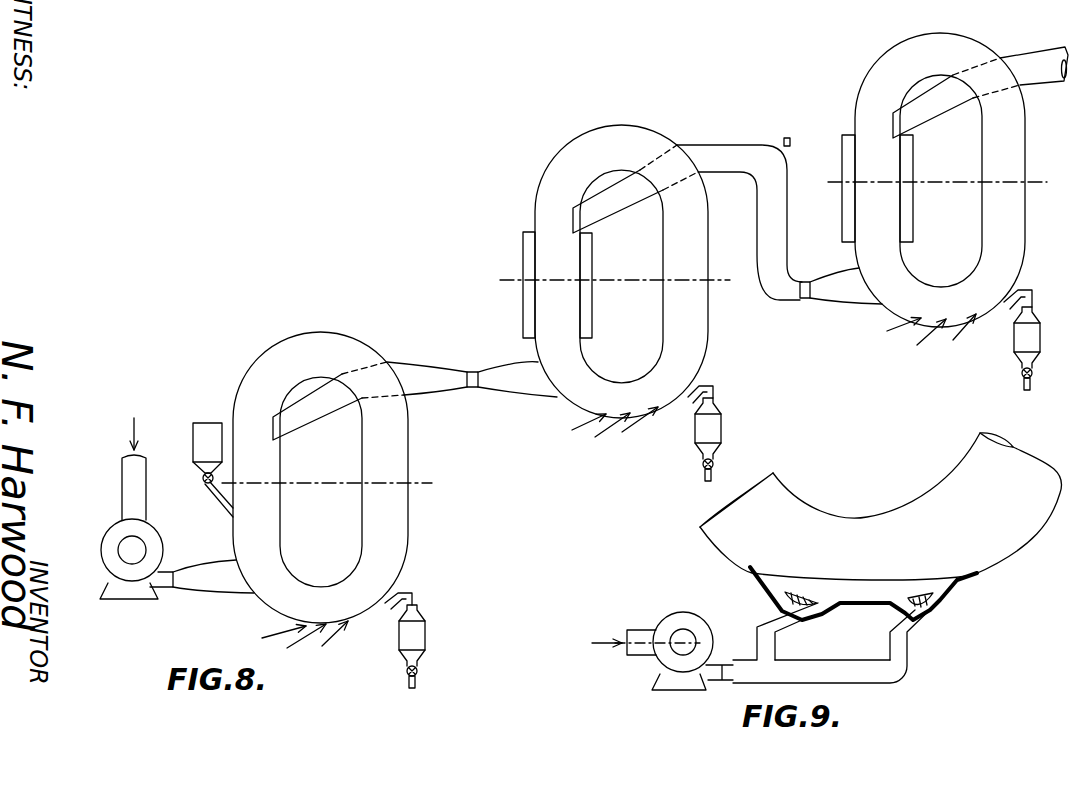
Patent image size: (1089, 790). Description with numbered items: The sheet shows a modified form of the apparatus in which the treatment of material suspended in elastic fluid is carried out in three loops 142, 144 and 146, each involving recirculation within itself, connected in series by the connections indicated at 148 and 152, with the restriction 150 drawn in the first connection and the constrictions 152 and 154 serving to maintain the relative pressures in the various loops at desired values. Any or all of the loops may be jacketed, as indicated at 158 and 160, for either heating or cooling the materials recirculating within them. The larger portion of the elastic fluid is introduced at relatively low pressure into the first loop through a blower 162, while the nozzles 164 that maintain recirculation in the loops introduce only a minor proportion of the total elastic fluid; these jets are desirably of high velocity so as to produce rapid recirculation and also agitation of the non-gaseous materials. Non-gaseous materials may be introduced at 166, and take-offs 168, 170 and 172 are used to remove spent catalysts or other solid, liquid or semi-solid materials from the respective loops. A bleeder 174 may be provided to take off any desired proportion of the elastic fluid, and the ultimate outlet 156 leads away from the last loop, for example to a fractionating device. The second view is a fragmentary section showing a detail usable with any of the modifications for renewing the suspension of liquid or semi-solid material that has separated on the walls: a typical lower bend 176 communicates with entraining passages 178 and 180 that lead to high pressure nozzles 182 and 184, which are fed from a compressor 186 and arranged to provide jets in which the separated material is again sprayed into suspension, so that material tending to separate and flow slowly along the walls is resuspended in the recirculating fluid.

In FIG. 8, the loop 142 is at (402, 525).
In FIG. 8, the loop 144 is at (703, 323).
In FIG. 8, the loop 146 is at (1015, 233).
In FIG. 8, the series connection 148 is at (433, 348).
In FIG. 8, the restricted throat 150 is at (475, 388).
In FIG. 8, the constriction 152 is at (702, 140).
In FIG. 8, the constriction 154 is at (805, 288).
In FIG. 8, the ultimate outlet 156 is at (1025, 54).
In FIG. 8, the jacket 158 is at (522, 242).
In FIG. 8, the jacket 160 is at (842, 143).
In FIG. 8, the blower 162 is at (110, 534).
In FIG. 8, the nozzles 164 is at (328, 647).
In FIG. 8, the non-gaseous material inlet 166 is at (196, 428).
In FIG. 8, the take-off 168 is at (419, 635).
In FIG. 8, the take-off 170 is at (717, 430).
In FIG. 8, the take-off 172 is at (1037, 338).
In FIG. 8, the bleeder 174 is at (784, 140).
In FIG. 9, the lower bend 176 is at (942, 498).
In FIG. 9, the entraining passage 178 is at (769, 598).
In FIG. 9, the entraining passage 180 is at (905, 612).
In FIG. 9, the high pressure nozzle 182 is at (789, 618).
In FIG. 9, the high pressure nozzle 184 is at (914, 624).
In FIG. 9, the compressor 186 is at (673, 616).